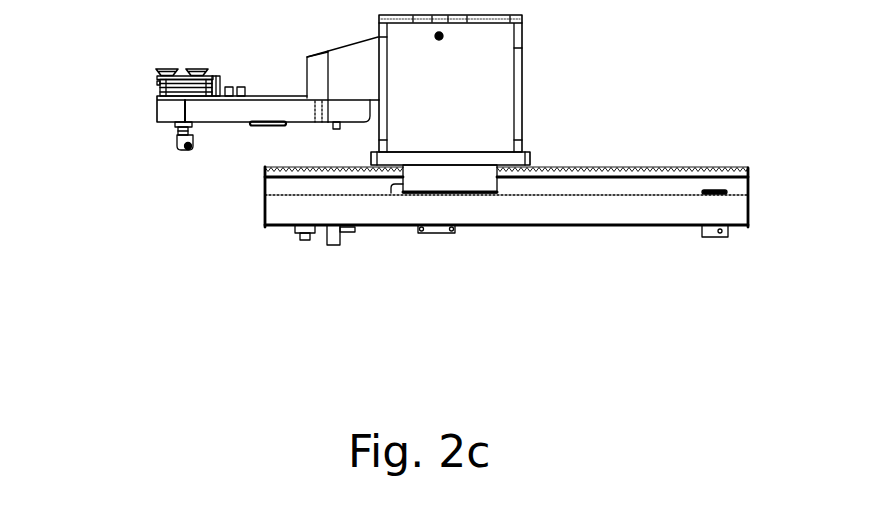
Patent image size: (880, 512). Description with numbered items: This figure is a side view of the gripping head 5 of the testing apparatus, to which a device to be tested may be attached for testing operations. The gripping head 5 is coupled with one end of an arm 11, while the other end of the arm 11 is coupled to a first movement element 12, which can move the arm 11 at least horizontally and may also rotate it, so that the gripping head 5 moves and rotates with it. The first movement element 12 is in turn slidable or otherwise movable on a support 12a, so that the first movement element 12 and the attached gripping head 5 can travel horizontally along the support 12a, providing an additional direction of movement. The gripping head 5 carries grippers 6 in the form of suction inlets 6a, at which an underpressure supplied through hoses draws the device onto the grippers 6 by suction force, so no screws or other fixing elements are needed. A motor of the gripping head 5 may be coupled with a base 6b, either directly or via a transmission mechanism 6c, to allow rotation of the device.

The gripping head 5 is at (126, 138).
The grippers 6 is at (146, 73).
The suction inlets 6a is at (197, 68).
The base 6b is at (158, 86).
The transmission mechanism 6c is at (177, 143).
The arm 11 is at (245, 122).
The first movement element 12 is at (522, 50).
The support 12a is at (638, 168).